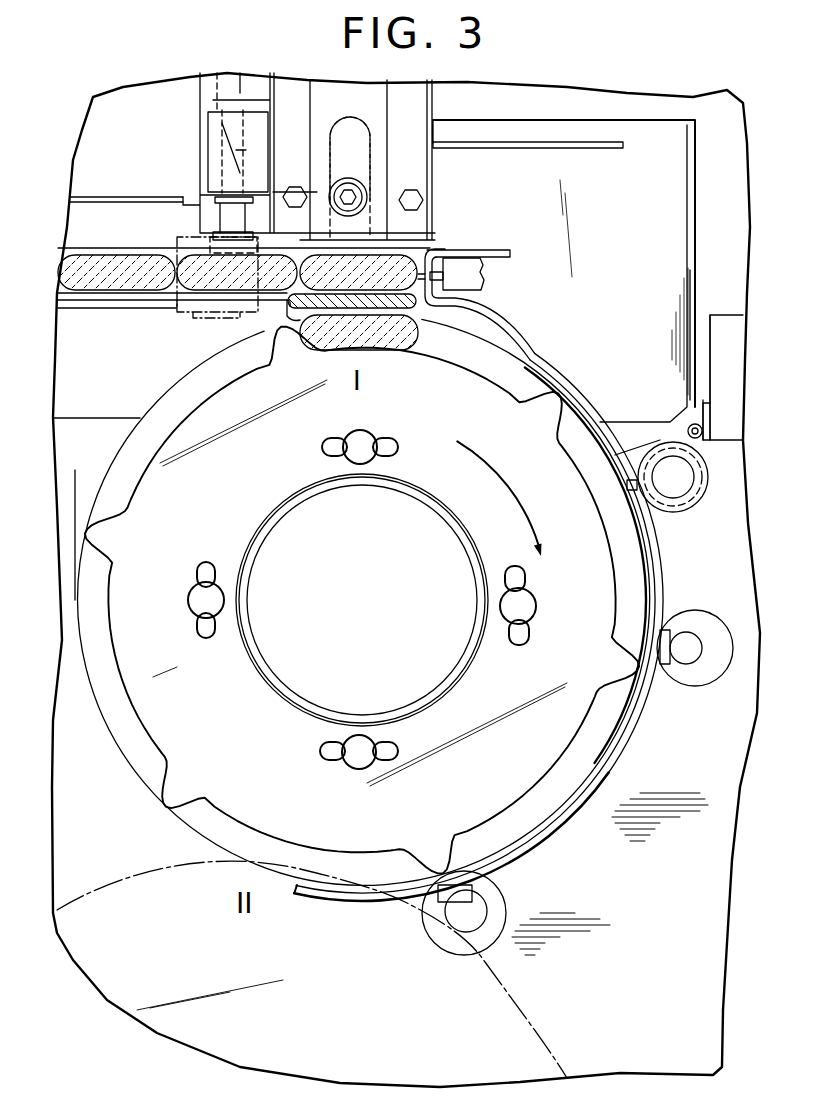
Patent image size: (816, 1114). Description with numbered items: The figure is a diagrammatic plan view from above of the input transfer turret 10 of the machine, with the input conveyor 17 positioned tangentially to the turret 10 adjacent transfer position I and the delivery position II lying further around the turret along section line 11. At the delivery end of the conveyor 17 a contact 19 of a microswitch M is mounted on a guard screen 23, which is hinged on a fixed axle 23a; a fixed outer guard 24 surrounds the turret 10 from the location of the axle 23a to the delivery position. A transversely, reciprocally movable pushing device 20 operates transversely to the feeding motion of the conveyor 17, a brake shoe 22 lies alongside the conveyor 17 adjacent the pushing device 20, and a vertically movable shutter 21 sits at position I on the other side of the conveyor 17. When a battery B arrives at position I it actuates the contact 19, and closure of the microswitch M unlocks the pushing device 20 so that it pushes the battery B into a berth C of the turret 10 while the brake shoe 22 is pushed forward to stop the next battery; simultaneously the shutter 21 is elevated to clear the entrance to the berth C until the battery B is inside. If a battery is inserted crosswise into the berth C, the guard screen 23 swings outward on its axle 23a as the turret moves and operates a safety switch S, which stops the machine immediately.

The input transfer turret 10 is at (362, 668).
The section line 11 is at (131, 876).
The input conveyor 17 is at (177, 273).
The contact 19 is at (438, 272).
The pushing device 20 is at (373, 172).
The shutter 21 is at (297, 320).
The brake shoe 22 is at (230, 217).
The guard screen 23 is at (437, 300).
The fixed axle 23a is at (673, 473).
The fixed outer guard 24 is at (628, 755).
The battery B is at (375, 272).
The berth C is at (140, 482).
The microswitch M is at (473, 277).
The safety switch S is at (717, 430).